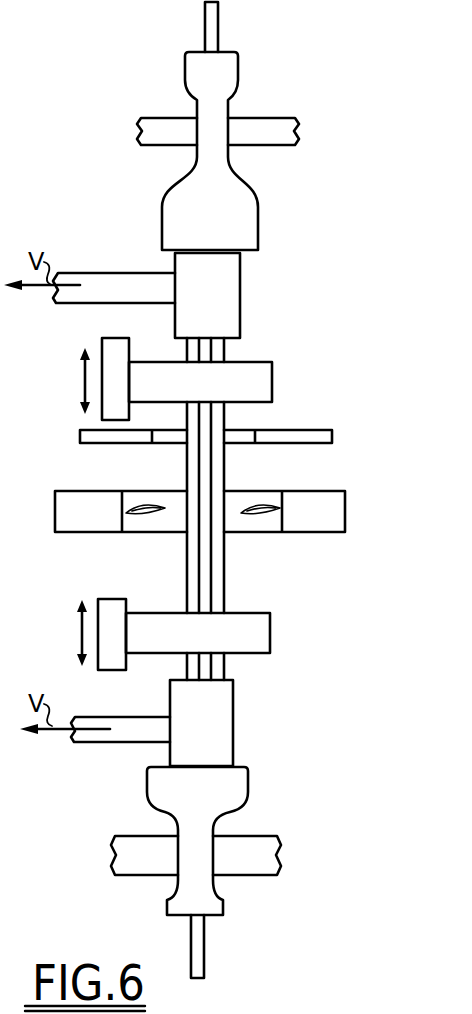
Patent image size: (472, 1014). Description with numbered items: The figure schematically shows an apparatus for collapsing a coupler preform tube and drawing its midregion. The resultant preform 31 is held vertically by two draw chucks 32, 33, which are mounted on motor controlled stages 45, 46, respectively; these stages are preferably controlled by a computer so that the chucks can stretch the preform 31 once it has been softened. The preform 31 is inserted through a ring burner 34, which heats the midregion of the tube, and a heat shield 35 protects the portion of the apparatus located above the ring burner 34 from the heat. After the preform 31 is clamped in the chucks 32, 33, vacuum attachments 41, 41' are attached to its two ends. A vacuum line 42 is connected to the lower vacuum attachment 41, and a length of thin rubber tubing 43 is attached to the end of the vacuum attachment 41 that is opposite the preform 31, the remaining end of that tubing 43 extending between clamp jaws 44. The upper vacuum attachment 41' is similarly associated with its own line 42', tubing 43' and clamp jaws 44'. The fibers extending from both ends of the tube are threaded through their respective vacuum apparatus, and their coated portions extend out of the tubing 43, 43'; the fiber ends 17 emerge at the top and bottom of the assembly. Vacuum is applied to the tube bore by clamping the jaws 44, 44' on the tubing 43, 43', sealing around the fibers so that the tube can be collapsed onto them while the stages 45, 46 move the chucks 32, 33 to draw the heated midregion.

The wire / filament rod 17 is at (219, 17).
The preform 31 is at (226, 563).
The chuck 32 is at (273, 382).
The chuck 33 is at (271, 628).
The ring burner 34 is at (328, 491).
The heat shield 35 is at (320, 430).
The vacuum attachment 41 is at (227, 723).
The upper vacuum attachment 41' is at (236, 295).
The vacuum line 42 is at (120, 751).
The vacuum line 42' is at (114, 264).
The thin rubber tubing 43 is at (222, 841).
The tubing 43' is at (237, 151).
The clamp jaws 44 is at (192, 855).
The clamp jaws 44' is at (219, 132).
The motor controlled stage 45 is at (118, 346).
The motor controlled stage 46 is at (110, 598).